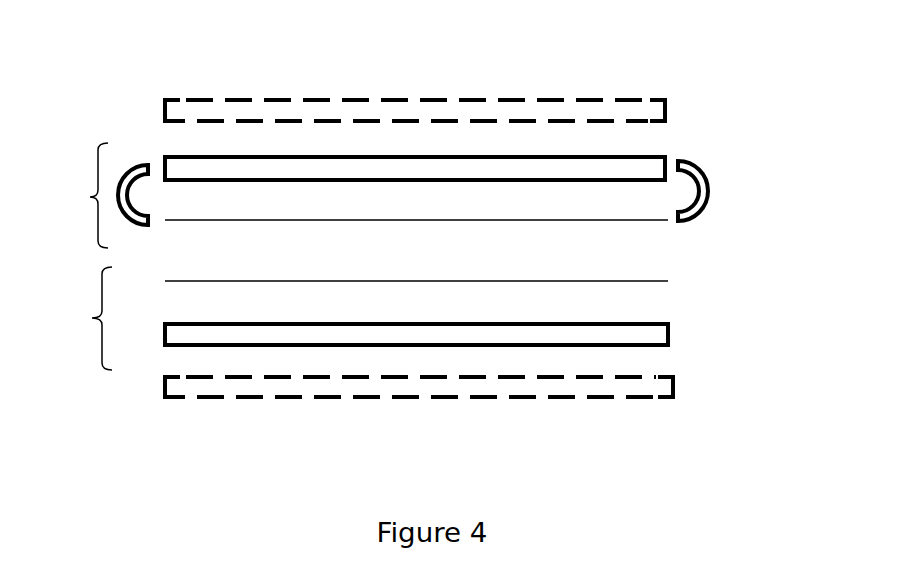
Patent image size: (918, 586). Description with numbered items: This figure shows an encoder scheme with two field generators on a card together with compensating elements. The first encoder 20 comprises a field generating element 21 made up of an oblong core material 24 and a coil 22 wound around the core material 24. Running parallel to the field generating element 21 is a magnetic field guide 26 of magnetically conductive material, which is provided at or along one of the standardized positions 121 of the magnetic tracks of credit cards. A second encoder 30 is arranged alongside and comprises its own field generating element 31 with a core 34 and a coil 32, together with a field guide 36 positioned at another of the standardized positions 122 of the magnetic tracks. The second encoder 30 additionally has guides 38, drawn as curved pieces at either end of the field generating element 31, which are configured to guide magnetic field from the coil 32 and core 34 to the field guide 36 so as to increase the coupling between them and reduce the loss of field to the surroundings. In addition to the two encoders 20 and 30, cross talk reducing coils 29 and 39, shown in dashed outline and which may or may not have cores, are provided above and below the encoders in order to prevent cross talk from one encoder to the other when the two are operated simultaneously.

The encoder 20 is at (71, 318).
The field generating element 21 is at (416, 389).
The coil 22 is at (416, 389).
The core material 24 is at (532, 338).
The field guide 26 is at (476, 275).
The cross talk reducing coil 29 is at (217, 95).
The second encoder 30 is at (69, 195).
The field generating element 31 is at (415, 94).
The coil 32 is at (415, 94).
The core 34 is at (494, 154).
The field guide 36 is at (610, 209).
The guides 38 is at (146, 133).
The cross talk reducing coil 39 is at (306, 396).
The standardized position 121 is at (674, 287).
The standardized position 122 is at (436, 114).